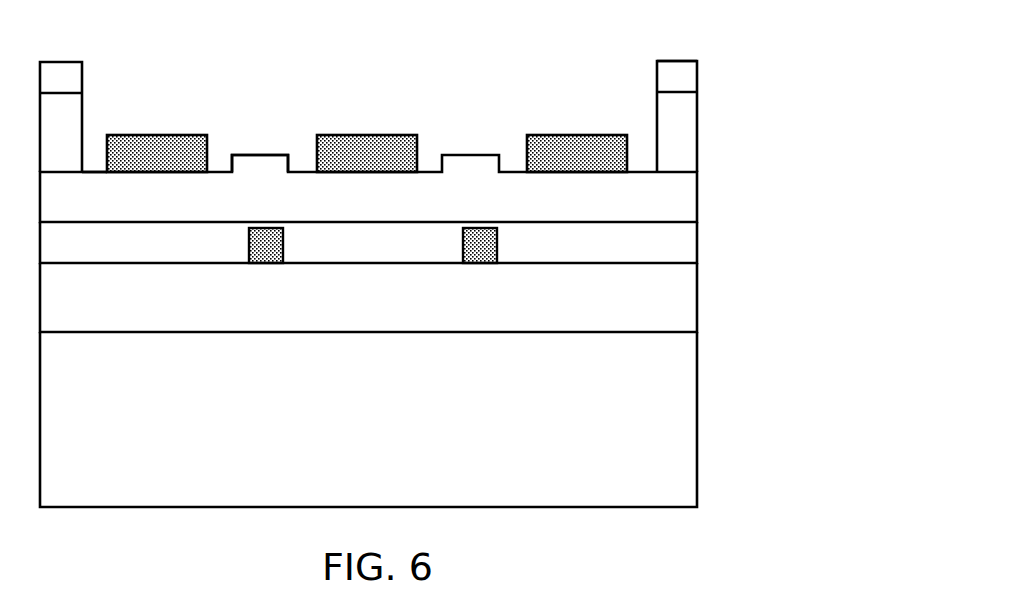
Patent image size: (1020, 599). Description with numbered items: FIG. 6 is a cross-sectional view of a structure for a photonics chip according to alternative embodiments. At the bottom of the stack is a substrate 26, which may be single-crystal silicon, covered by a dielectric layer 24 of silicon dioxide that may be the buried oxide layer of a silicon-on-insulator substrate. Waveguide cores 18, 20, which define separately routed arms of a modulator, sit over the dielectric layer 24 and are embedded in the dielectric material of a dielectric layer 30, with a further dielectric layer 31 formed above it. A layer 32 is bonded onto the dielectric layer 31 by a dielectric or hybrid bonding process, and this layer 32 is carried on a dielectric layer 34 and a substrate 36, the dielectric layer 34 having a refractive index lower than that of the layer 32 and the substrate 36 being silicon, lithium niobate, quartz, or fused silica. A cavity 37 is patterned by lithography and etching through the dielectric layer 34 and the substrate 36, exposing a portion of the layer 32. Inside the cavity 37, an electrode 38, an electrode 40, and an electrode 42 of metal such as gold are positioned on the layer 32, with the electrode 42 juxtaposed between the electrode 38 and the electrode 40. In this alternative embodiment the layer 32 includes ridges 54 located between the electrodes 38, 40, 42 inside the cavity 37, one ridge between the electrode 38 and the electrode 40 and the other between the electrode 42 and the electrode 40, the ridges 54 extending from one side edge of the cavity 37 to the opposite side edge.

The waveguide core 18 is at (265, 252).
The waveguide core 20 is at (482, 252).
The dielectric layer 24 is at (633, 310).
The substrate 26 is at (633, 420).
The dielectric layer 30 is at (633, 252).
The dielectric layer 31 is at (633, 217).
The layer 32 is at (457, 190).
The dielectric layer 34 is at (673, 133).
The substrate 36 is at (677, 81).
The cavity 37 is at (133, 107).
The electrode 38 is at (162, 155).
The electrode 40 is at (563, 153).
The electrode 42 is at (367, 153).
The ridges 54 is at (232, 135).